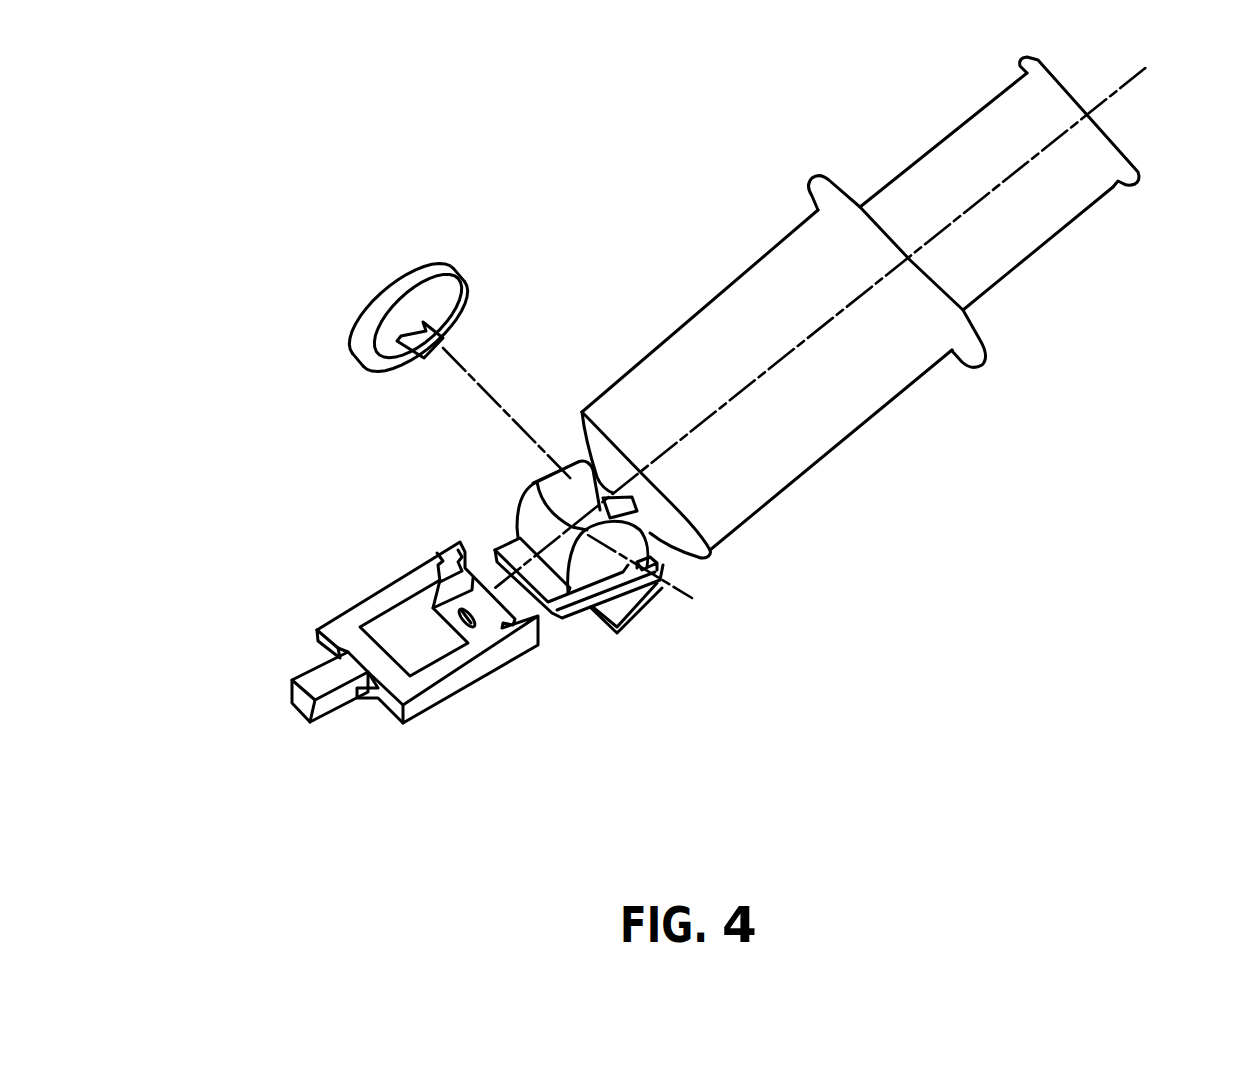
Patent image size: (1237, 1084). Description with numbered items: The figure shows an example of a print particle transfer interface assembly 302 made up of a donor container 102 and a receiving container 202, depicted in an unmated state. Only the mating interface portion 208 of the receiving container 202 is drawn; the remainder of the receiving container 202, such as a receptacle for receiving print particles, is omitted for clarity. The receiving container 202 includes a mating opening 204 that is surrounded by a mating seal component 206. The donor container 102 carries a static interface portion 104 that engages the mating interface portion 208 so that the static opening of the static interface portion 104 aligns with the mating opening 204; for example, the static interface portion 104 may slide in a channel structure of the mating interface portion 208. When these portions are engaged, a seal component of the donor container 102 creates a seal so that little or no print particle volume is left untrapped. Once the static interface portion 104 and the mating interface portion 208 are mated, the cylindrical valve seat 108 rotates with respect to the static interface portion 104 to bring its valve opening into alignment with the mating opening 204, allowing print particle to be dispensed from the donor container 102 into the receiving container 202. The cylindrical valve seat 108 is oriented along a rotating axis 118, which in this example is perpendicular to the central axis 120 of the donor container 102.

The donor container 102 is at (633, 186).
The static interface portion 104 is at (518, 505).
The cylindrical valve seat 108 is at (560, 466).
The rotating axis 118 is at (696, 603).
The central axis 120 is at (1120, 90).
The receiving container 202 is at (290, 774).
The mating opening 204 is at (470, 625).
The mating seal component 206 is at (433, 608).
The mating interface portion 208 is at (317, 630).
The print particle transfer interface assembly 302 is at (307, 227).